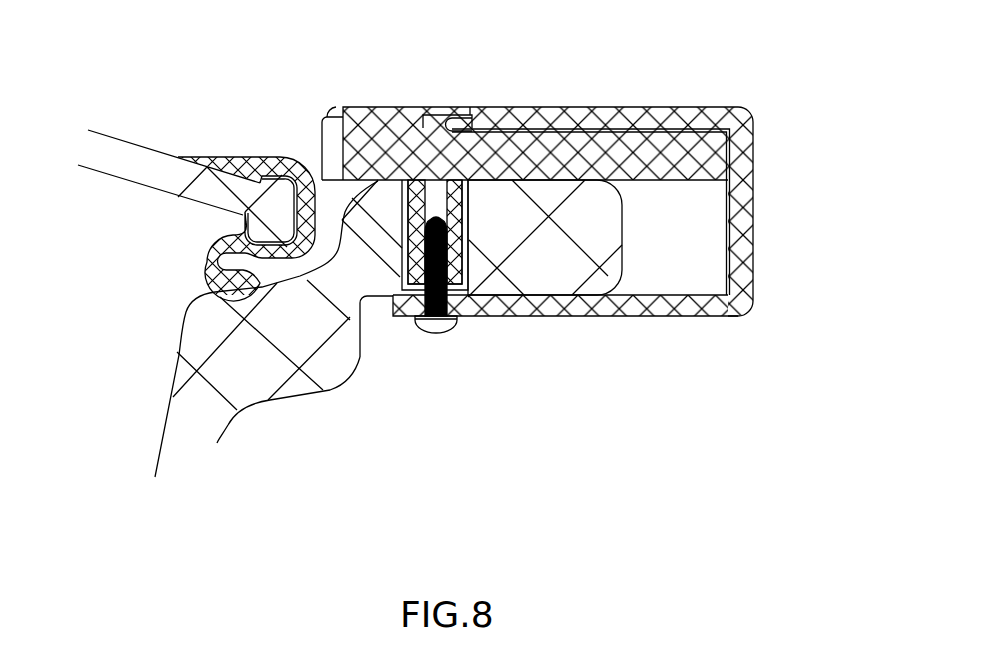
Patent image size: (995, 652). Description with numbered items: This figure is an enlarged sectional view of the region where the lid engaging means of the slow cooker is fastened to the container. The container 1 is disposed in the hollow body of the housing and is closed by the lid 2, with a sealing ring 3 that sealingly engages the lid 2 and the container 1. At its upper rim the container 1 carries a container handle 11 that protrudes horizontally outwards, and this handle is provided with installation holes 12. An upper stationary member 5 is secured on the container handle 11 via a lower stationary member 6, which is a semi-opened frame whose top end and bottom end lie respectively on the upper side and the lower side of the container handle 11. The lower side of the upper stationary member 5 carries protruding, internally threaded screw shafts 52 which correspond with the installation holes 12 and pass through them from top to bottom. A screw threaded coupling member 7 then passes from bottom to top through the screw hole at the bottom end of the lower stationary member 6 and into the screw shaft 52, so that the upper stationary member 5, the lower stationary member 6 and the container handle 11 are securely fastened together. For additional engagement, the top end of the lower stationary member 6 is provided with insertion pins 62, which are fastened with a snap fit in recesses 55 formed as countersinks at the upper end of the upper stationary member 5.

The container 1 is at (322, 385).
The lid 2 is at (153, 173).
The sealing ring 3 is at (215, 265).
The upper stationary member 5 is at (372, 140).
The lower stationary member 6 is at (713, 313).
The screw threaded coupling member 7 is at (433, 333).
The container handle 11 is at (588, 237).
The installation hole 12 is at (457, 320).
The screw shaft 52 is at (435, 202).
The recess 55 is at (433, 123).
The insertion pin 62 is at (457, 125).